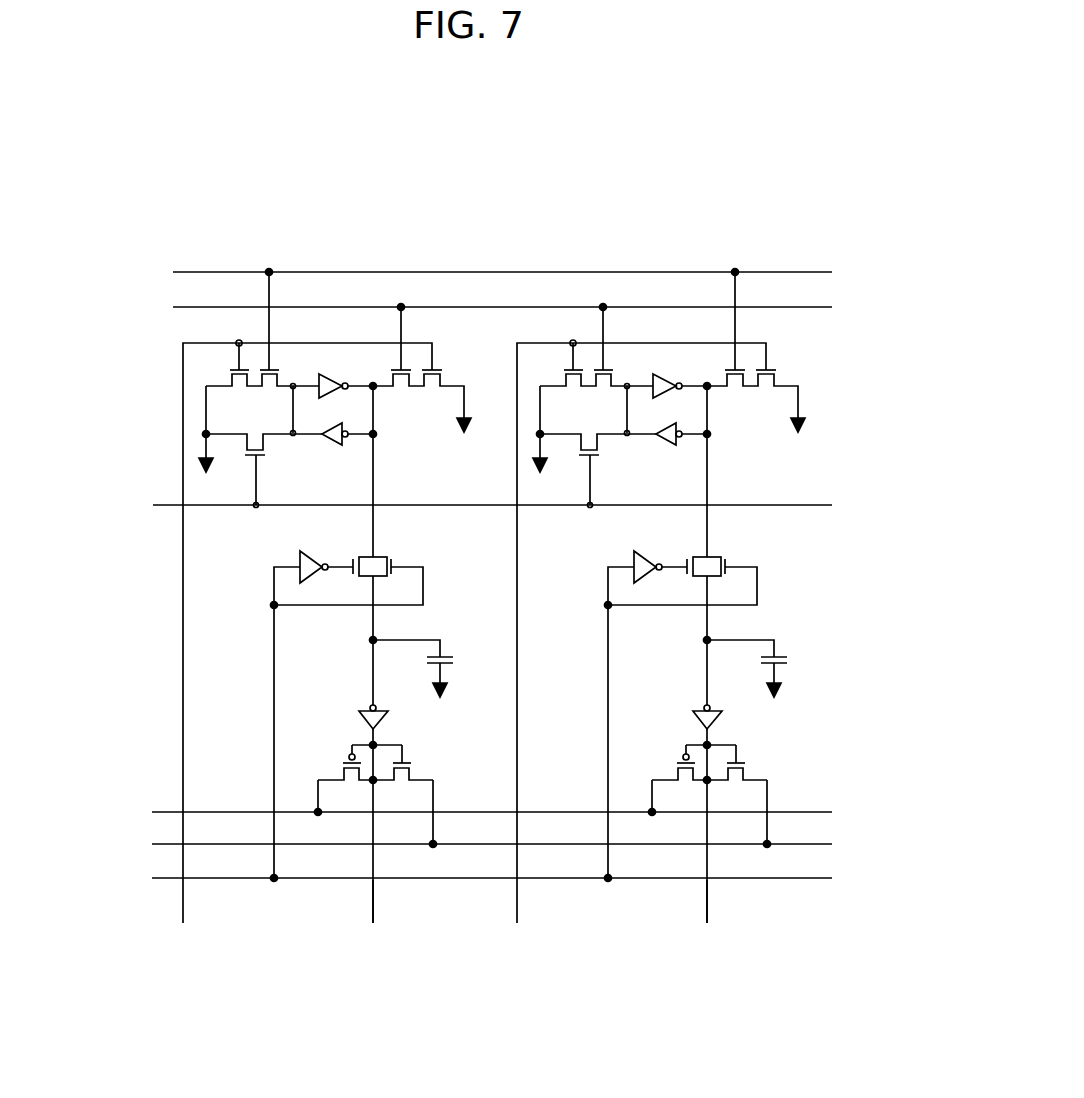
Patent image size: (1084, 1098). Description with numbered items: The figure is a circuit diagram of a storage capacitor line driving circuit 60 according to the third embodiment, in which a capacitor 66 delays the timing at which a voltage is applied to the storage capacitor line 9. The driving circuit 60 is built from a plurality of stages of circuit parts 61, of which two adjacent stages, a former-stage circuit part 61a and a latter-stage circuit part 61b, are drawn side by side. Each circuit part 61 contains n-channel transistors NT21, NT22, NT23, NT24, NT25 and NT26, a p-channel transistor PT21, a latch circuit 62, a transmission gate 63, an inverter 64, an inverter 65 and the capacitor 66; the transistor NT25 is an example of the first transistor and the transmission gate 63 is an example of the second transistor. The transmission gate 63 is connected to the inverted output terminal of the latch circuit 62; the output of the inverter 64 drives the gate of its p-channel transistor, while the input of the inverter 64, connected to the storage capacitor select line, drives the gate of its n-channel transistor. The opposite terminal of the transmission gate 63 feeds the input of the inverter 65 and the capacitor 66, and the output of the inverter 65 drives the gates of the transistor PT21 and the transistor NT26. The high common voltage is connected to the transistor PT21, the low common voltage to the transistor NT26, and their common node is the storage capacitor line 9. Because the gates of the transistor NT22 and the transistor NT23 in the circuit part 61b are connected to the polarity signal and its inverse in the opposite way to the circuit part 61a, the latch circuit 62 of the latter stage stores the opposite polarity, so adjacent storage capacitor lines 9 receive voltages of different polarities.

The storage capacitor line driving circuit 60 is at (815, 220).
The circuit part 61 is at (472, 577).
The circuit part of the former stage 61a is at (508, 972).
The circuit part of the latter stage 61b is at (842, 972).
The latch circuit 62 is at (337, 358).
The transmission gate 63 is at (377, 557).
The inverter 64 is at (310, 551).
The inverter 65 is at (366, 722).
The capacitor 66 is at (446, 655).
The storage capacitor line 9 is at (372, 910).
The n-channel transistor NT21 is at (239, 368).
The n-channel transistor NT22 is at (277, 368).
The n-channel transistor NT23 is at (395, 368).
The n-channel transistor NT24 is at (438, 368).
The n-channel transistor NT25 is at (258, 432).
The n-channel transistor NT26 is at (407, 758).
The p-channel transistor PT21 is at (348, 757).